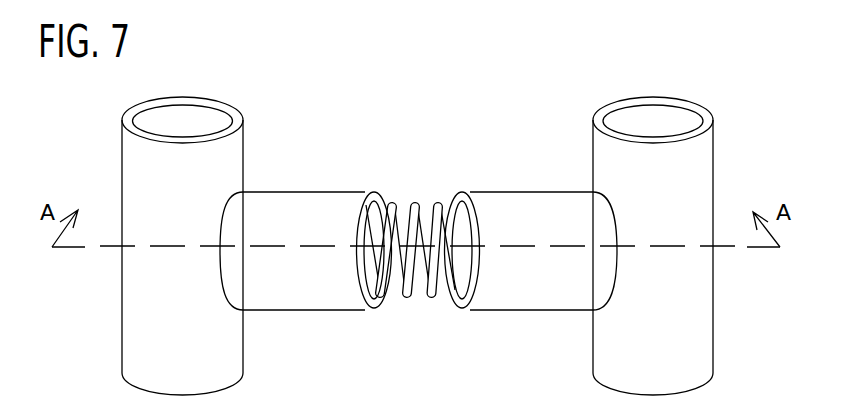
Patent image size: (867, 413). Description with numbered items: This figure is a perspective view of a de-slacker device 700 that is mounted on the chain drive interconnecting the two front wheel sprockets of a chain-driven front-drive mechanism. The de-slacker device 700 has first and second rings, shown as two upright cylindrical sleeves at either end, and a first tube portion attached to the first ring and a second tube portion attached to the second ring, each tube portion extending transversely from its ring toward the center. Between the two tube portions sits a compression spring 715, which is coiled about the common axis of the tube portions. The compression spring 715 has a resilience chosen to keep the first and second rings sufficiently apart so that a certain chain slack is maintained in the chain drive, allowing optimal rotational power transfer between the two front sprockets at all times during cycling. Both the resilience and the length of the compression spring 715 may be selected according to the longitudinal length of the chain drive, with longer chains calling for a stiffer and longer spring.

The de-slacker device 700 is at (422, 353).
The compression spring 715 is at (413, 206).